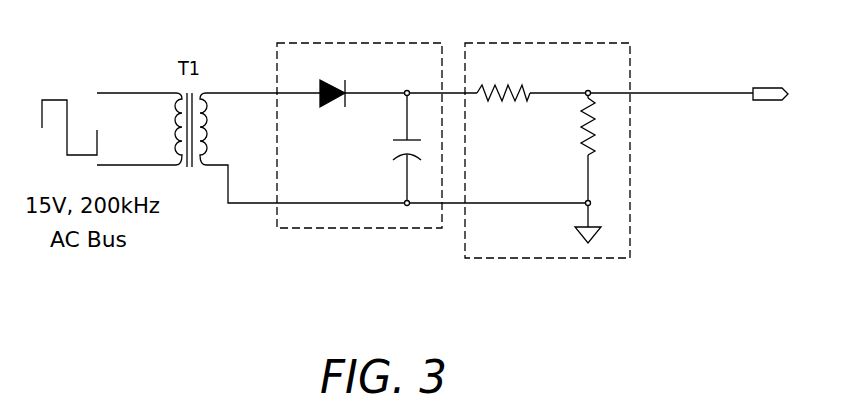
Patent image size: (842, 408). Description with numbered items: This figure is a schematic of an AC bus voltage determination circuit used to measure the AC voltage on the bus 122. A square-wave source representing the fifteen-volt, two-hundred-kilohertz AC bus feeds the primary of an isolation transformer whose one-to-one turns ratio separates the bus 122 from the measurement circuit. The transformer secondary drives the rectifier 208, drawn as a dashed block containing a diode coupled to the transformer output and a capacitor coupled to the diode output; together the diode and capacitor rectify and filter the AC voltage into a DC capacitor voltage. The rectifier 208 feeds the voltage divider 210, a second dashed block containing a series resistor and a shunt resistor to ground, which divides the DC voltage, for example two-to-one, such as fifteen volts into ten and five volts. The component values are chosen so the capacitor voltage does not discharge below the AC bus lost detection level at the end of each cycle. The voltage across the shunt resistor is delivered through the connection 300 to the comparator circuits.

The bus 122 is at (125, 117).
The rectifier 208 is at (357, 230).
The voltage divider 210 is at (547, 260).
The connection 300 is at (768, 102).